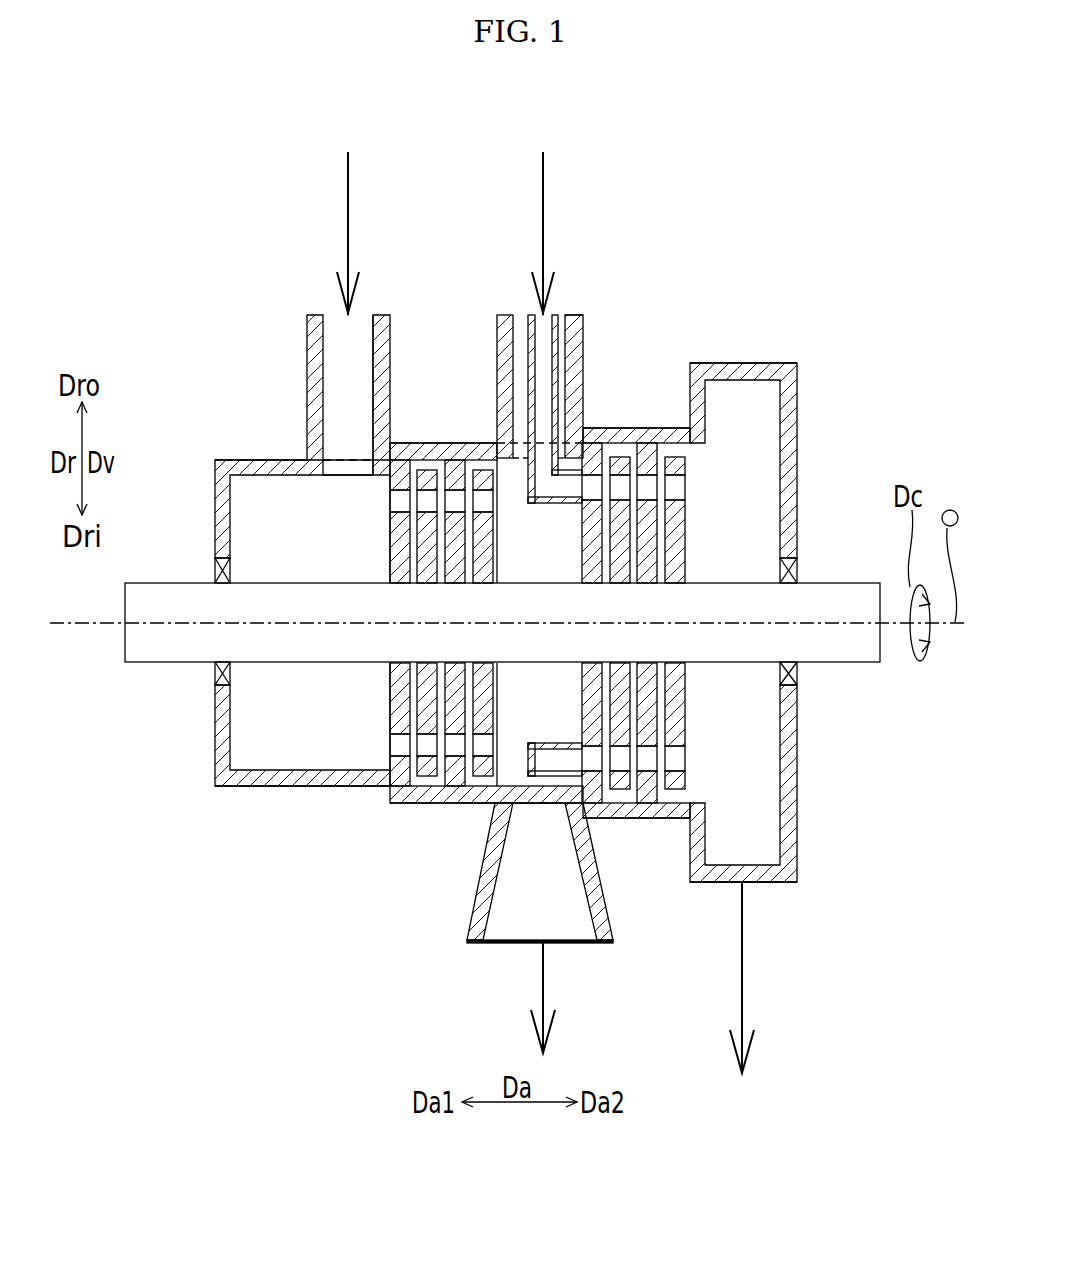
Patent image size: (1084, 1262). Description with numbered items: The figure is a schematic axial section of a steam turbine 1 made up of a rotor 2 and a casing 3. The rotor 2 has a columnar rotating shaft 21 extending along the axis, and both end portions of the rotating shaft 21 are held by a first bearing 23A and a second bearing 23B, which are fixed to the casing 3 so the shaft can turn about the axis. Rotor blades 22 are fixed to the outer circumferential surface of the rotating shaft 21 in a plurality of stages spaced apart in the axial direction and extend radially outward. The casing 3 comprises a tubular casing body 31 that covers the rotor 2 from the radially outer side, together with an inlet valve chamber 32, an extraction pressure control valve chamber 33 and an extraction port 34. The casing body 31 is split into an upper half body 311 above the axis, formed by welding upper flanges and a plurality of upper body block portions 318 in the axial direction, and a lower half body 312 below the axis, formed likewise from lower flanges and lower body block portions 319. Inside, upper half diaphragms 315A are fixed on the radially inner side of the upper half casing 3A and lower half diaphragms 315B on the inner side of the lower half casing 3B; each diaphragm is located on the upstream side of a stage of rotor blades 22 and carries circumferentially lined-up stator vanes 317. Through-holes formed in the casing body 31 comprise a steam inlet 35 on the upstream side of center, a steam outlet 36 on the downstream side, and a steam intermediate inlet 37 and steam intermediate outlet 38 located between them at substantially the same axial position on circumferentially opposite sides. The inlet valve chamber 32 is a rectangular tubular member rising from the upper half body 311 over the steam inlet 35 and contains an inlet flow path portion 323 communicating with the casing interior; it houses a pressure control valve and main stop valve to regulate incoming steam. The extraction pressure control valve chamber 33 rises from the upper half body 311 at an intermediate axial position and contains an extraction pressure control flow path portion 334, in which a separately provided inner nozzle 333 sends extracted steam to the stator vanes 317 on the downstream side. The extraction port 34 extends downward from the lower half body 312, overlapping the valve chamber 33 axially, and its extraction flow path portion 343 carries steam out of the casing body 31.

The steam turbine 1 is at (264, 214).
The rotor 2 is at (502, 586).
The rotating shaft 21 is at (338, 663).
The rotor blades 22 is at (483, 500).
The first bearing 23A is at (215, 673).
The second bearing 23B is at (798, 675).
The casing 3 is at (515, 613).
The casing body 31 is at (457, 587).
The upper half body 311 is at (237, 467).
The lower half body 312 is at (243, 785).
The upper half diaphragms 315A is at (390, 537).
The lower half diaphragms 315B is at (390, 712).
The stator vanes 317 is at (402, 500).
The upper body block portions 318 is at (250, 460).
The lower body block portions 319 is at (263, 786).
The inlet valve chamber 32 is at (338, 313).
The inlet flow path portion 323 is at (373, 367).
The extraction pressure control valve chamber 33 is at (569, 327).
The inner nozzle 333 is at (552, 300).
The extraction pressure control flow path portion 334 is at (523, 445).
The extraction port 34 is at (527, 908).
The extraction flow path portion 343 is at (593, 917).
The steam inlet 35 is at (330, 467).
The steam outlet 36 is at (763, 882).
The steam intermediate inlet 37 is at (535, 407).
The steam intermediate outlet 38 is at (530, 778).
The upper half casing 3A is at (806, 410).
The lower half casing 3B is at (808, 812).